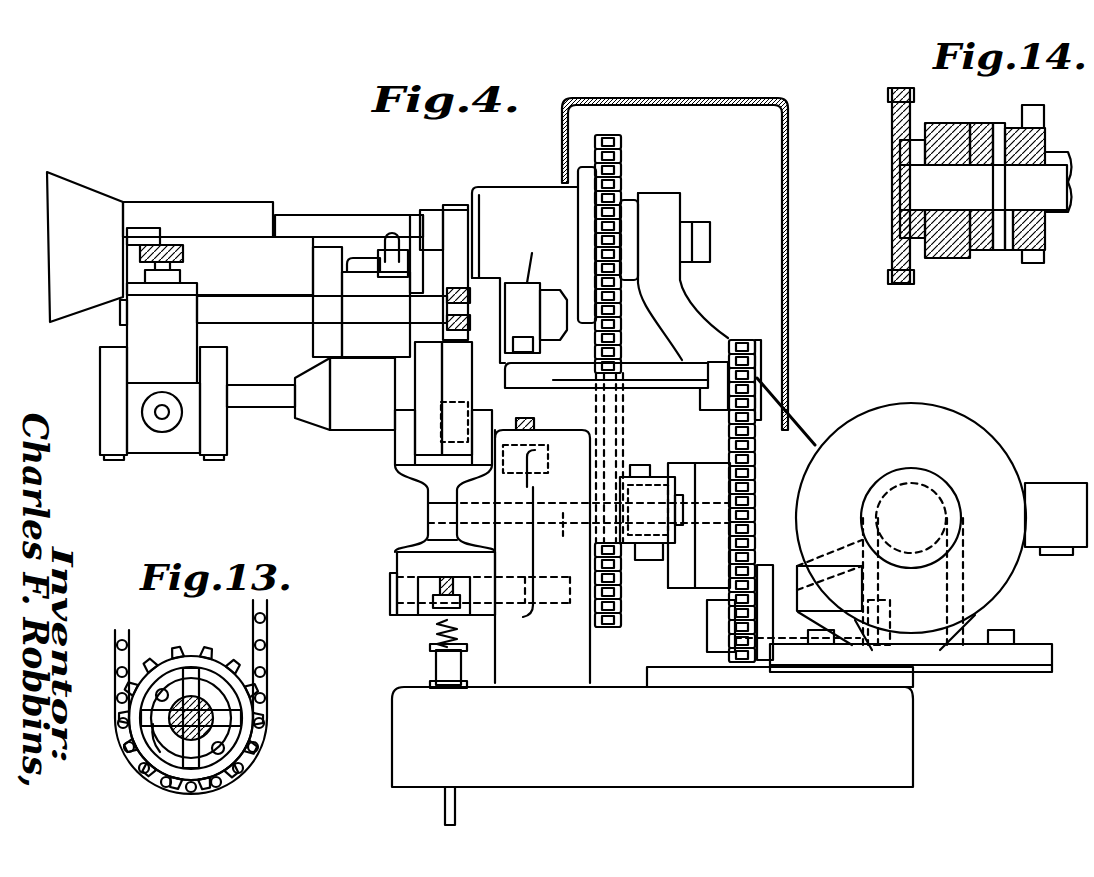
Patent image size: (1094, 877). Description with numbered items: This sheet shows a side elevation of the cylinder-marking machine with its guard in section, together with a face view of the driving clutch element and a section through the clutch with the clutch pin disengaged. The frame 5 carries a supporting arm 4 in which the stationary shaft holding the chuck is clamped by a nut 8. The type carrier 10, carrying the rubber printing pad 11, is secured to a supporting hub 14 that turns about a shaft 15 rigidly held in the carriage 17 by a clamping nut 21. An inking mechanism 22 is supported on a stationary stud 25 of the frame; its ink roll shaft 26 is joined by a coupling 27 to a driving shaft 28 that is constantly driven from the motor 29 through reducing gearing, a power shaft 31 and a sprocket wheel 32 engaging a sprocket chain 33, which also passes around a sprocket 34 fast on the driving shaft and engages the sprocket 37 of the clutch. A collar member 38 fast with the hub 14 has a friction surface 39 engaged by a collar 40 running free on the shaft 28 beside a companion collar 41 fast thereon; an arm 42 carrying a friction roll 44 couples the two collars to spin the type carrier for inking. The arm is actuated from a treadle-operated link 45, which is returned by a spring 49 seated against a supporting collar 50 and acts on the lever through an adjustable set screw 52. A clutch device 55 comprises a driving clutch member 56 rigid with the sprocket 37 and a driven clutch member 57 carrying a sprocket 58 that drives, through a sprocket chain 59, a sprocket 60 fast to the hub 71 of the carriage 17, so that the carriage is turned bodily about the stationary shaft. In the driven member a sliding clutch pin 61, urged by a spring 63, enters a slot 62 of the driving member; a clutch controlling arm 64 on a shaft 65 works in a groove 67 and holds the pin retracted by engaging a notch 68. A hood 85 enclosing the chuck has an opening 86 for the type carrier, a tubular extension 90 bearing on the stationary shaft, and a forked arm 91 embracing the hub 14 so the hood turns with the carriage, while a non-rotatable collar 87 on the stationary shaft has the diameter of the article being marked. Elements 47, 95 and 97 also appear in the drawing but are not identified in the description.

In FIG. 4, the supporting arm 4 is at (700, 330).
In FIG. 4, the frame 5 is at (395, 723).
In FIG. 4, the nut 8 is at (700, 225).
In FIG. 4, the type carrier 10 is at (222, 222).
In FIG. 4, the rubber printing pad 11 is at (133, 238).
In FIG. 4, the supporting hub 14 is at (360, 262).
In FIG. 4, the shaft 15 is at (560, 300).
In FIG. 4, the carriage 17 is at (537, 270).
In FIG. 4, the clamping nut 21 is at (535, 342).
In FIG. 4, the inking mechanism 22 is at (125, 338).
In FIG. 4, the stationary stud 25 is at (266, 302).
In FIG. 4, the shaft 26 is at (260, 390).
In FIG. 4, the coupling 27 is at (328, 402).
In FIG. 4, the driving shaft 28 is at (612, 368).
In FIG. 4, the motor 29 is at (928, 410).
In FIG. 4, the power shaft 31 is at (790, 580).
In FIG. 4, the sprocket wheel 32 is at (707, 640).
In FIG. 4, the sprocket chain 33 is at (762, 468).
In FIG. 13, the sprocket chain 33 is at (265, 628).
In FIG. 14, the sprocket chain 33 is at (1040, 112).
In FIG. 4, the sprocket 34 is at (757, 380).
In FIG. 13, the sprocket 37 is at (203, 652).
In FIG. 14, the sprocket 37 is at (1035, 140).
In FIG. 4, the ring or collar member 38 is at (428, 222).
In FIG. 4, the peripheral friction surface 39 is at (452, 225).
In FIG. 4, the collar 40 is at (445, 385).
In FIG. 4, the companion collar 41 is at (408, 380).
In FIG. 4, the arm 42 is at (440, 510).
In FIG. 4, the friction roll 44 is at (412, 478).
In FIG. 4, the link 45 is at (443, 806).
In FIG. 4, the pedestal 47 is at (512, 595).
In FIG. 4, the spring 49 is at (435, 636).
In FIG. 4, the supporting collar 50 is at (433, 668).
In FIG. 4, the adjustable set screw 52 is at (432, 598).
In FIG. 4, the clutch device 55 is at (688, 592).
In FIG. 14, the clutch device 55 is at (1005, 252).
In FIG. 4, the driving clutch member 56 is at (710, 465).
In FIG. 13, the driving clutch member 56 is at (250, 733).
In FIG. 14, the driving clutch member 56 is at (1025, 252).
In FIG. 4, the driven clutch member 57 is at (640, 463).
In FIG. 14, the driven clutch member 57 is at (945, 260).
In FIG. 4, the sprocket 58 is at (622, 585).
In FIG. 14, the sprocket 58 is at (895, 250).
In FIG. 4, the sprocket chain 59 is at (610, 195).
In FIG. 4, the sprocket 60 is at (630, 282).
In FIG. 14, the clutch pin 61 is at (975, 205).
In FIG. 13, the groove or slot 62 is at (175, 730).
In FIG. 14, the groove or slot 62 is at (998, 125).
In FIG. 14, the spring 63 is at (912, 200).
In FIG. 14, the clutch controlling arm 64 is at (978, 252).
In FIG. 4, the shaft 65 is at (542, 550).
In FIG. 4, the groove 67 is at (665, 475).
In FIG. 14, the groove 67 is at (955, 122).
In FIG. 14, the notch 68 is at (912, 228).
In FIG. 4, the hub 71 is at (508, 195).
In FIG. 4, the hood 85 is at (90, 196).
In FIG. 4, the opening 86 is at (152, 235).
In FIG. 4, the collar 87 is at (455, 207).
In FIG. 4, the tubular extension 90 is at (310, 218).
In FIG. 4, the forked arm 91 is at (388, 245).
In FIG. 4, the cover 95 is at (790, 180).
In FIG. 13, the shaft end 97 is at (208, 708).
In FIG. 14, the shaft end 97 is at (1050, 160).